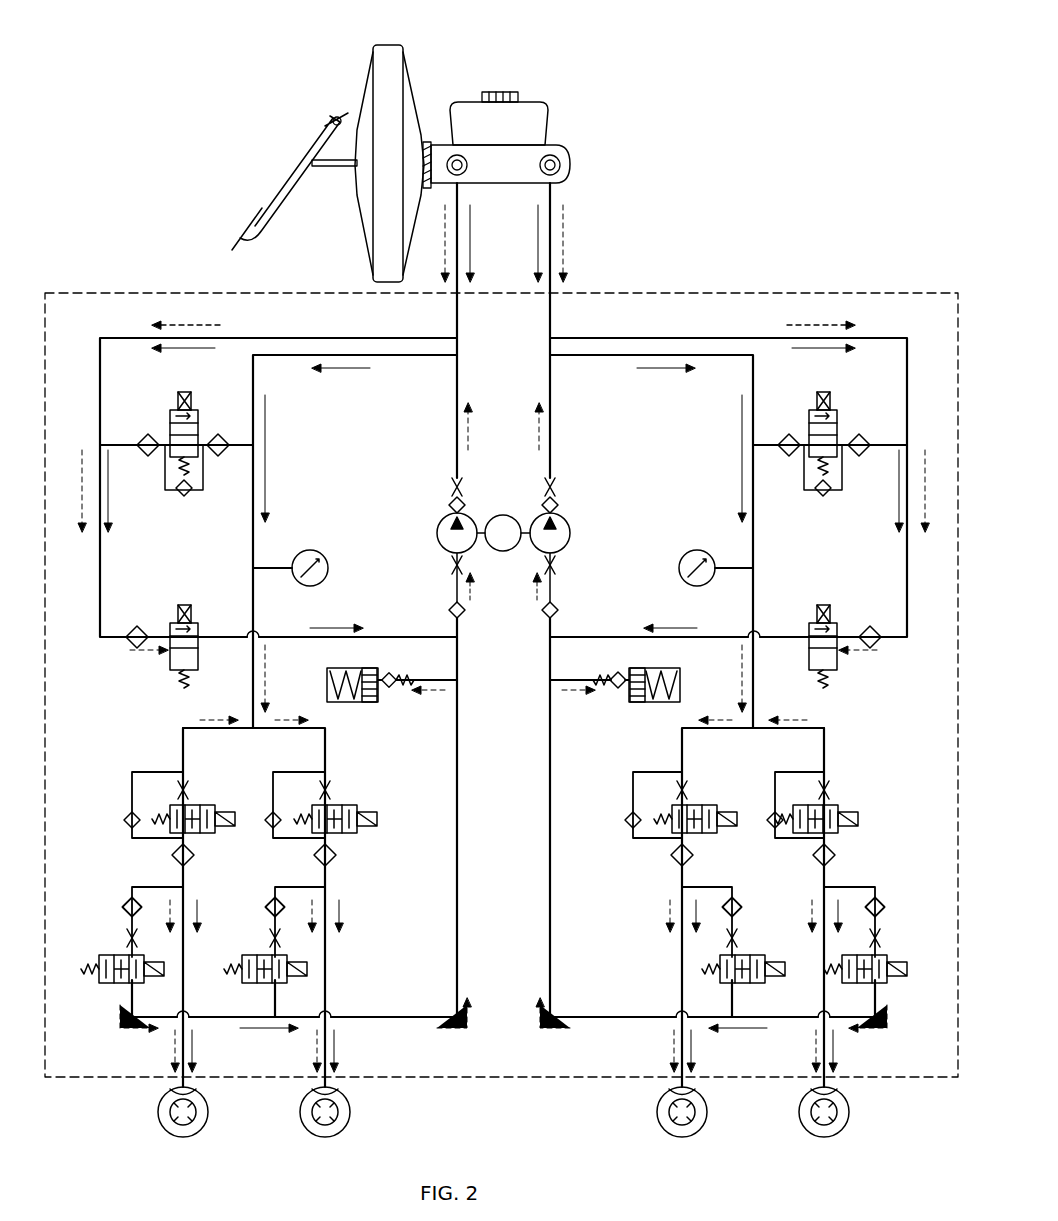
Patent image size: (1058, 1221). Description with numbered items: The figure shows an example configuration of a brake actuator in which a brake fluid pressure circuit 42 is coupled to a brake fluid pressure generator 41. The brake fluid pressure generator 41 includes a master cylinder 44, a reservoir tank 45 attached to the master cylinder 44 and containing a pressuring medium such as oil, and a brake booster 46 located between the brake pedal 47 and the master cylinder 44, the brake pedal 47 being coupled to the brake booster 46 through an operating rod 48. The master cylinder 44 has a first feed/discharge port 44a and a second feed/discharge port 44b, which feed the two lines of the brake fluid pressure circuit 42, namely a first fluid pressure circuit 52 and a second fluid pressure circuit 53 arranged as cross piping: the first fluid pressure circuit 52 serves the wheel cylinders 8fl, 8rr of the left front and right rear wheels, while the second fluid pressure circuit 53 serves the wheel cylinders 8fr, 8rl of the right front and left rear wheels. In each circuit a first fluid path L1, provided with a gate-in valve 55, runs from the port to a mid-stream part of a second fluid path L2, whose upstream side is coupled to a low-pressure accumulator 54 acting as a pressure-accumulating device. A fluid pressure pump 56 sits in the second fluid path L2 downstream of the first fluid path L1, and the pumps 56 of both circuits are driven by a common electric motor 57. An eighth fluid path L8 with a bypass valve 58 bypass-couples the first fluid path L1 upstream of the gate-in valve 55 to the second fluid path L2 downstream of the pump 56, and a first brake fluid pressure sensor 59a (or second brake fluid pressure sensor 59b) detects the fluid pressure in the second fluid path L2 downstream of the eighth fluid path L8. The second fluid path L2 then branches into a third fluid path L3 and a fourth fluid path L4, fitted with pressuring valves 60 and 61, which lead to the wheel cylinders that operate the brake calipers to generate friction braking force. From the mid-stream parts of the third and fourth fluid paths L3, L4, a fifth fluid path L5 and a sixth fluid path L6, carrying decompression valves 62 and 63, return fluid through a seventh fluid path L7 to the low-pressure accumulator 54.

The brake fluid pressure generator 41 is at (572, 108).
The brake fluid pressure circuit 42 is at (883, 292).
The master cylinder 44 is at (575, 160).
The first feed/discharge port 44a is at (465, 172).
The second feed/discharge port 44b is at (562, 168).
The reservoir tank 45 is at (520, 100).
The brake booster 46 is at (420, 100).
The brake pedal 47 is at (298, 200).
The operating rod 48 is at (336, 170).
The first fluid pressure circuit 52 is at (185, 318).
The second fluid pressure circuit 53 is at (820, 318).
The low-pressure accumulator 54 is at (377, 705).
The gate-in valve 55 is at (200, 625).
The fluid pressure pump 56 is at (437, 533).
The electric motor 57 is at (503, 514).
The bypass valve 58 is at (200, 420).
The first brake fluid pressure sensor 59a is at (310, 550).
The second brake fluid pressure sensor 59b is at (697, 550).
The pressuring valve 60 is at (352, 805).
The pressuring valve 61 is at (210, 805).
The decompression valve 62 is at (248, 957).
The decompression valve 63 is at (105, 957).
The wheel cylinder 8rr is at (207, 1100).
The wheel cylinder 8fl is at (349, 1100).
The wheel cylinder 8fr is at (706, 1100).
The wheel cylinder 8rl is at (848, 1100).
The first fluid path L1 is at (332, 338).
The second fluid path L2 is at (455, 388).
The third fluid path L3 is at (330, 990).
The fourth fluid path L4 is at (190, 1015).
The fifth fluid path L5 is at (310, 887).
The sixth fluid path L6 is at (150, 887).
The seventh fluid path L7 is at (455, 875).
The eighth fluid path L8 is at (128, 445).